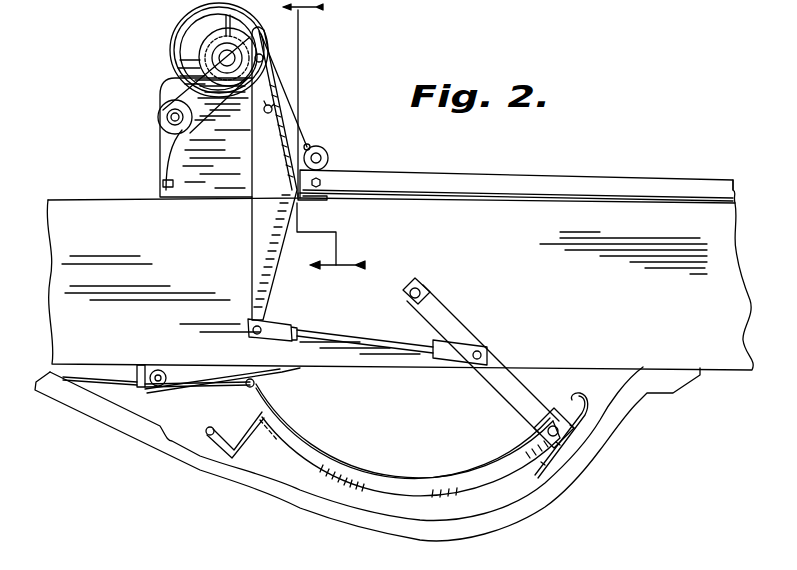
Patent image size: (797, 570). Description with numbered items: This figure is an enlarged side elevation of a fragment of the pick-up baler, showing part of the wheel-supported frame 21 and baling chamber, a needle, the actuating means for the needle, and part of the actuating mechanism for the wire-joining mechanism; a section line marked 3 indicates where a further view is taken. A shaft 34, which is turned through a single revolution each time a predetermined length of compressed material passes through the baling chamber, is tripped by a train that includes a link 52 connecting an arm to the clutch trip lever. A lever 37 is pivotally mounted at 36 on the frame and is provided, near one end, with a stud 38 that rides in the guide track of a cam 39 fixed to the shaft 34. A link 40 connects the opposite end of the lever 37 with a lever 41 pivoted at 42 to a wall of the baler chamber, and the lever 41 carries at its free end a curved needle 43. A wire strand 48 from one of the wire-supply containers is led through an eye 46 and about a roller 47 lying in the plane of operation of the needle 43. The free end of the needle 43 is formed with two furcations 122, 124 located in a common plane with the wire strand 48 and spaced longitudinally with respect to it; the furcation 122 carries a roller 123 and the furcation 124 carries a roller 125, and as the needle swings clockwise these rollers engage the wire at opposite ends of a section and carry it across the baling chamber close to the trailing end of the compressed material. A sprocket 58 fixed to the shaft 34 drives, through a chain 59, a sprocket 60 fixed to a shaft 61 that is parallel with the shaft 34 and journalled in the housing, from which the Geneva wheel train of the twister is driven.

The frame 21 is at (643, 220).
The section line 3- 3 is at (324, 143).
The shaft 34 is at (233, 55).
The pivot 36 is at (273, 109).
The lever 37 is at (252, 262).
The stud 38 is at (264, 58).
The cam 39 is at (172, 38).
The link 40 is at (352, 341).
The lever 41 is at (513, 393).
The pivot 42 is at (428, 290).
The curved needle 43 is at (392, 482).
The eye 46 is at (140, 389).
The roller 47 is at (173, 388).
The wire strand 48 is at (203, 388).
The link 52 is at (302, 130).
The sprocket 58 is at (228, 50).
The chain 59 is at (183, 70).
The sprocket 60 is at (164, 110).
The shaft 61 is at (167, 121).
The furcation 122 is at (268, 400).
The roller 123 is at (245, 389).
The furcation 124 is at (230, 448).
The roller 125 is at (205, 431).